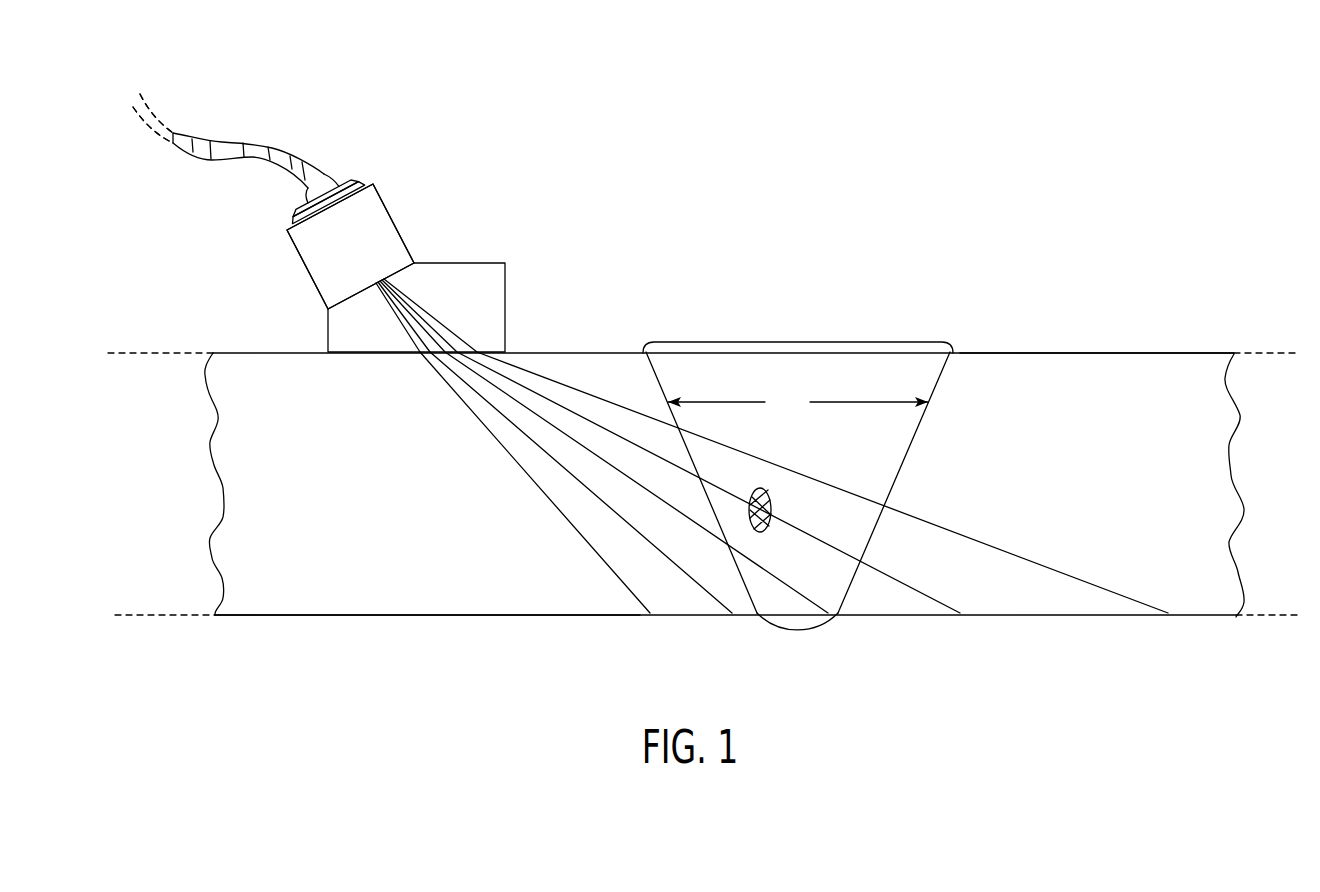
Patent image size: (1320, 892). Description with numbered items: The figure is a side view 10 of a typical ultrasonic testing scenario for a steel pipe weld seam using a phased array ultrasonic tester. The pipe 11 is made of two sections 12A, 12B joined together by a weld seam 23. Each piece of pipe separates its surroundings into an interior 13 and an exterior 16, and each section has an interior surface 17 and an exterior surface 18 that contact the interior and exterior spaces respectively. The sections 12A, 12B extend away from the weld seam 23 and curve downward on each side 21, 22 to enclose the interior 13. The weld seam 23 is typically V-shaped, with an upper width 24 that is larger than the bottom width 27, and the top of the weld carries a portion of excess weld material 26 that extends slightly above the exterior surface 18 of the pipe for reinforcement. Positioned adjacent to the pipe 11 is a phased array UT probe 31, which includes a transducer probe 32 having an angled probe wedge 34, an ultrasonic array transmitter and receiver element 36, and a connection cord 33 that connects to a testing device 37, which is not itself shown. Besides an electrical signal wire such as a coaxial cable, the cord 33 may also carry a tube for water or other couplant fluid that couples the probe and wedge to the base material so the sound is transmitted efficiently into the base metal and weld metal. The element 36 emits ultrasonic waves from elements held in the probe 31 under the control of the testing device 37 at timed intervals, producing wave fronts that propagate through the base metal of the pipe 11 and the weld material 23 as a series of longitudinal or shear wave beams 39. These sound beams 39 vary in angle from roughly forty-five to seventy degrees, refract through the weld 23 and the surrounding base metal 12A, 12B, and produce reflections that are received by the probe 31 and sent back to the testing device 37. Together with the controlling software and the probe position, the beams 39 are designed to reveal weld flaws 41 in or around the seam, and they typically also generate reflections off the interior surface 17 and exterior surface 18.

The side view 10 is at (1041, 105).
The pipe 11 is at (1131, 250).
The pipe section 12A is at (270, 504).
The pipe section 12B is at (1110, 504).
The interior 13 is at (698, 701).
The exterior 16 is at (780, 257).
The interior surface 17 is at (358, 615).
The exterior surface 18 is at (1056, 353).
The side 21 is at (131, 340).
The side 22 is at (1267, 325).
The weld seam 23 is at (849, 300).
The upper width 24 is at (798, 401).
The excess weld material 26 is at (660, 343).
The bottom width 27 is at (810, 632).
The phased array UT probe 31 is at (449, 106).
The transducer probe 32 is at (474, 173).
The connection cord 33 is at (257, 151).
The angled probe wedge 34 is at (497, 276).
The ultrasonic array transmitter and receiver element 36 is at (387, 270).
The testing device 37 is at (148, 77).
The sound beams 39 is at (474, 451).
The weld flaws 41 is at (769, 489).